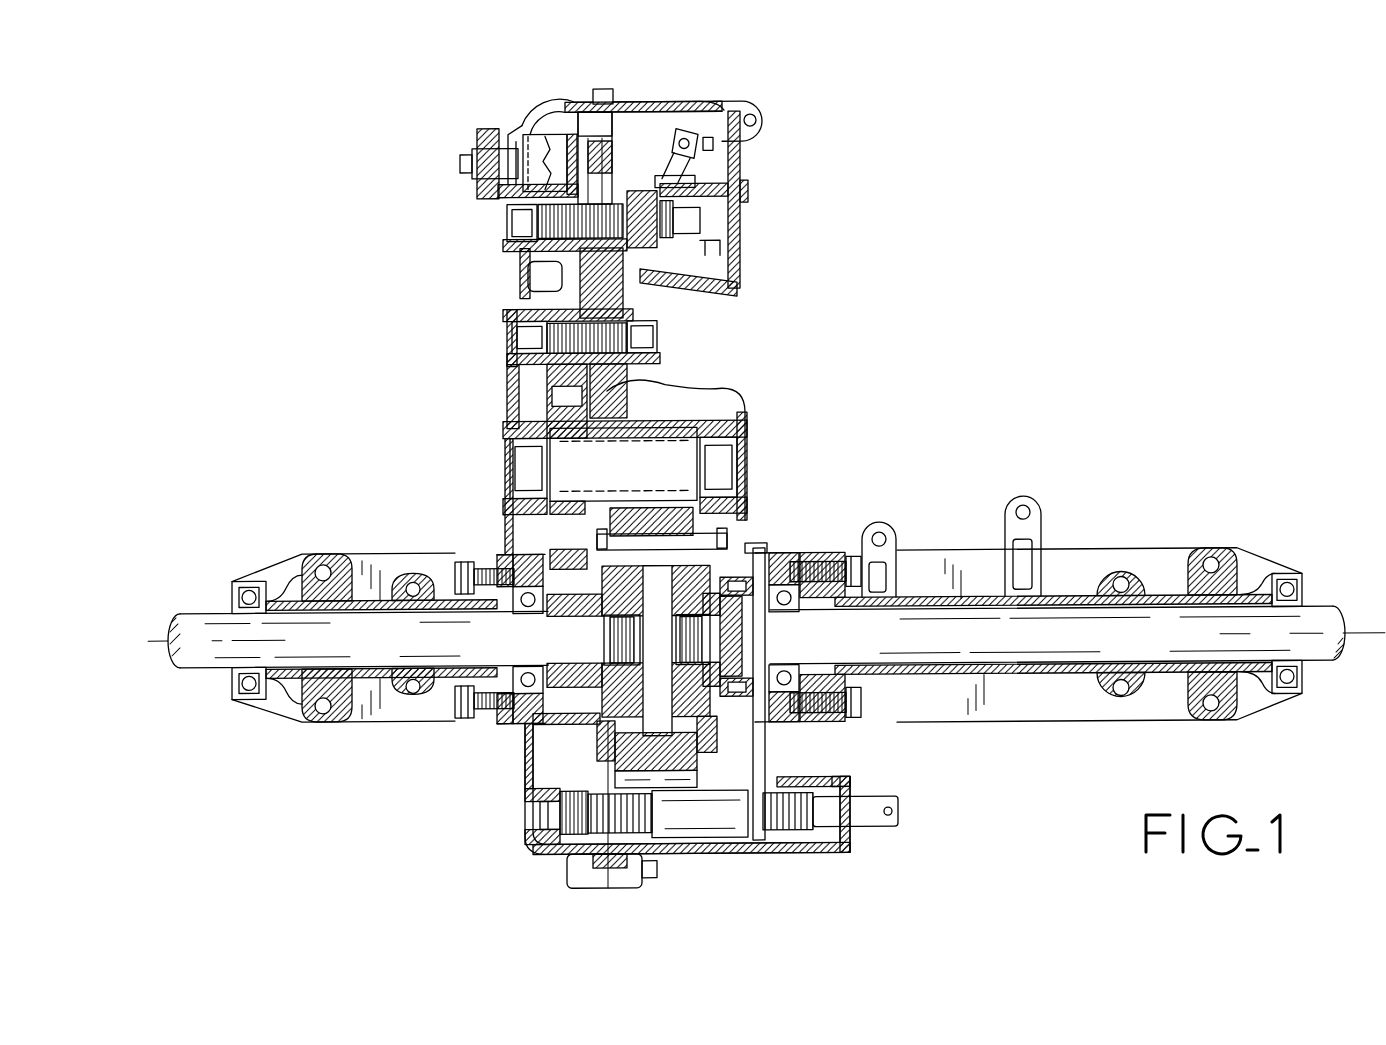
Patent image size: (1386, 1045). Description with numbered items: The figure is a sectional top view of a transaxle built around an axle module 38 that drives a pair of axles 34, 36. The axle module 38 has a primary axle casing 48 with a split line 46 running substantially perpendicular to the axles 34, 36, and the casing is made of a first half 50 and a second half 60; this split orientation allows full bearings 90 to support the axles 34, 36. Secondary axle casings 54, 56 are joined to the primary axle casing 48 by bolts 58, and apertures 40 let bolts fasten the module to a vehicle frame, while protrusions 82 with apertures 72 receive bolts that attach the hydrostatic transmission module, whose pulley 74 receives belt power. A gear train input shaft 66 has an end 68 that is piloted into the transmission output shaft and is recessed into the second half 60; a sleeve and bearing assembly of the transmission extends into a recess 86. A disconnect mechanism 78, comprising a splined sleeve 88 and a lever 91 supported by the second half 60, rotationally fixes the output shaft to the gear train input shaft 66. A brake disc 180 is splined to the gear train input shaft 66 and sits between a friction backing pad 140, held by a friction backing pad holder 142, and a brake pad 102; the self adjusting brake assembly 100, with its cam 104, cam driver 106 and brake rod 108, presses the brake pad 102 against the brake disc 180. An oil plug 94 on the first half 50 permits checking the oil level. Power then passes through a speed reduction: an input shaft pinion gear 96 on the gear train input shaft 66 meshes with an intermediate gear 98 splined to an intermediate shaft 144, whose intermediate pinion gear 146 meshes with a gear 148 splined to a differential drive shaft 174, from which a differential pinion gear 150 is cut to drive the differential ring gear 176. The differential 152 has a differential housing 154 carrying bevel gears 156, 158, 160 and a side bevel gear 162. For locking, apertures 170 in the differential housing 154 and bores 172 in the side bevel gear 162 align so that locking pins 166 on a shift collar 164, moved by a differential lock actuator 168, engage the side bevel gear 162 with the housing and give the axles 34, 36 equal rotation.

The axle 34 is at (198, 616).
The axle 36 is at (1298, 608).
The axle module 38 is at (1032, 122).
The apertures 40 is at (1118, 576).
The split line 46 is at (612, 102).
The primary axle casing 48 is at (598, 78).
The first half 50 is at (528, 838).
The secondary axle casing 54 is at (310, 738).
The secondary axle casing 56 is at (1052, 762).
The bolts 58 is at (463, 560).
The second half 60 is at (838, 848).
The gear train input shaft 66 is at (643, 205).
The end 68 is at (700, 218).
The apertures 72 is at (758, 122).
The pulley 74 is at (758, 98).
The disconnect mechanism 78 is at (695, 118).
The protrusions 82 is at (893, 537).
The recess 86 is at (748, 184).
The splined sleeve 88 is at (718, 246).
The full bearings 90 is at (232, 690).
The lever 91 is at (715, 153).
The oil plug 94 is at (535, 287).
The input shaft pinion gear 96 is at (662, 284).
The intermediate gear 98 is at (626, 398).
The self adjusting brake assembly 100 is at (558, 140).
The brake pad 102 is at (547, 137).
The cam 104 is at (523, 128).
The cam driver 106 is at (487, 140).
The brake rod 108 is at (480, 168).
The friction backing pad 140 is at (581, 115).
The friction backing pad holder 142 is at (600, 148).
The intermediate shaft 144 is at (650, 335).
The intermediate pinion gear 146 is at (545, 310).
The gear 148 is at (548, 386).
The differential pinion gear 150 is at (683, 428).
The differential 152 is at (738, 510).
The differential housing 154 is at (715, 752).
The bevel gear 156 is at (600, 560).
The bevel gear 158 is at (628, 708).
The bevel gear 160 is at (612, 606).
The side bevel gear 162 is at (715, 712).
The shift collar 164 is at (755, 555).
The locking pins 166 is at (735, 574).
The differential lock actuator 168 is at (784, 844).
The apertures 170 is at (742, 626).
The bores 172 is at (705, 690).
The differential drive shaft 174 is at (518, 468).
The differential ring gear 176 is at (630, 760).
The brake disc 180 is at (522, 270).